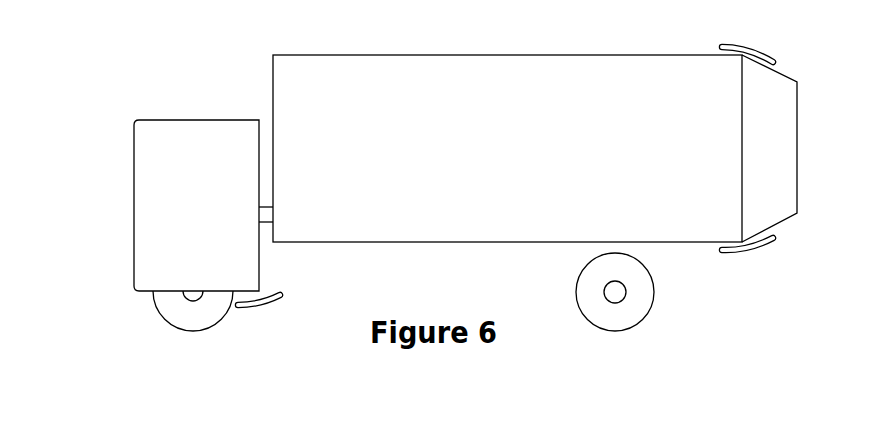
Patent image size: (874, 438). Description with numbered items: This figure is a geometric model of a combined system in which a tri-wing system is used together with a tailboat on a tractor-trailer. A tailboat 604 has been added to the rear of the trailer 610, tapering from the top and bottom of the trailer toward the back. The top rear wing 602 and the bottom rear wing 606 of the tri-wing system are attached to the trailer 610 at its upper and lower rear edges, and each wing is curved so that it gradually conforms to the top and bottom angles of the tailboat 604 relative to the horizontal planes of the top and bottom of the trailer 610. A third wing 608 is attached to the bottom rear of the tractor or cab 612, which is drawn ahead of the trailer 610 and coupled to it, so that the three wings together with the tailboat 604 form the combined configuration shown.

The top rear wing 602 is at (758, 43).
The tailboat 604 is at (805, 108).
The bottom rear wing 606 is at (770, 248).
The third wing 608 is at (287, 293).
The trailer 610 is at (264, 57).
The tractor or cab 612 is at (137, 113).